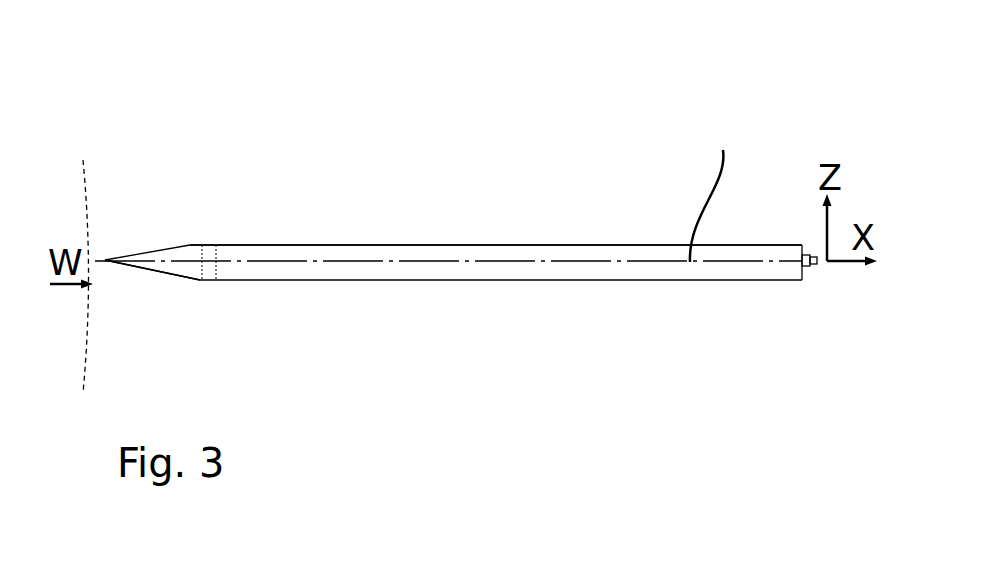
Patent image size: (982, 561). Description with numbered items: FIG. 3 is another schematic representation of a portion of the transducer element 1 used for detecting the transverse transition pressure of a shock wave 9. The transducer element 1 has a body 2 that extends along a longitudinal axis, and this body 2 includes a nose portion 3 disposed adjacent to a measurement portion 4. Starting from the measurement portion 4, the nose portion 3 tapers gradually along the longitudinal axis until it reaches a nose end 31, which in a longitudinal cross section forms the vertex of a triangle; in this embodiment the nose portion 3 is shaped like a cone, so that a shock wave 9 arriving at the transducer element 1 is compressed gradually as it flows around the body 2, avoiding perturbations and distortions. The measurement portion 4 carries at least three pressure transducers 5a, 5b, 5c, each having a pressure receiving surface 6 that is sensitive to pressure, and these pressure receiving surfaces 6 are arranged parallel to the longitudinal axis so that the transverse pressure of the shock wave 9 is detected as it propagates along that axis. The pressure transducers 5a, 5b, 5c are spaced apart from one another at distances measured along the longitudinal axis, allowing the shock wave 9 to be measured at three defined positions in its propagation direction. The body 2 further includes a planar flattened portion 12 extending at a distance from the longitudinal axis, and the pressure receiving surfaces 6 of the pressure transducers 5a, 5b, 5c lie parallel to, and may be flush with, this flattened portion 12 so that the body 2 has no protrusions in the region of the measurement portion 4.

The transducer element 1 is at (126, 71).
The body 2 is at (154, 141).
The shock wave 9 is at (93, 184).
The measurement portion 4 is at (464, 320).
The flattened portion 12 is at (637, 245).
The pressure receiving surface 6 is at (496, 157).
The pressure transducer 5a is at (376, 222).
The pressure transducer 5b is at (461, 222).
The pressure transducer 5c is at (550, 227).
The nose end 31 is at (105, 263).
The nose portion 3 is at (187, 268).